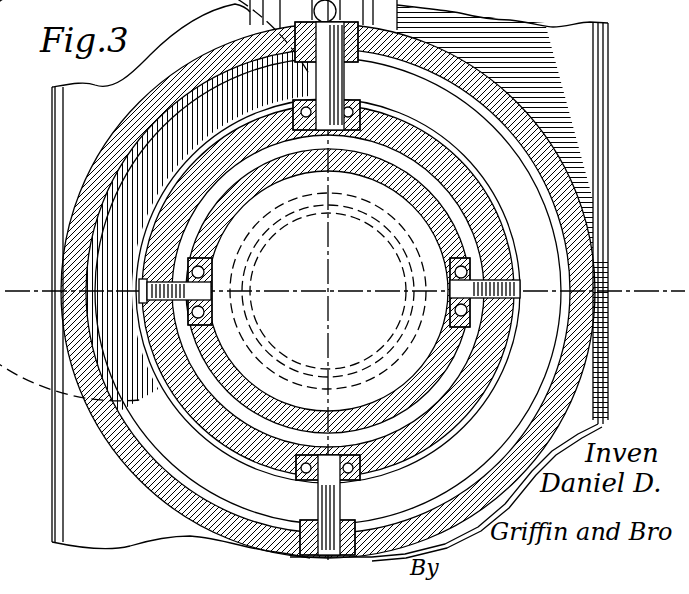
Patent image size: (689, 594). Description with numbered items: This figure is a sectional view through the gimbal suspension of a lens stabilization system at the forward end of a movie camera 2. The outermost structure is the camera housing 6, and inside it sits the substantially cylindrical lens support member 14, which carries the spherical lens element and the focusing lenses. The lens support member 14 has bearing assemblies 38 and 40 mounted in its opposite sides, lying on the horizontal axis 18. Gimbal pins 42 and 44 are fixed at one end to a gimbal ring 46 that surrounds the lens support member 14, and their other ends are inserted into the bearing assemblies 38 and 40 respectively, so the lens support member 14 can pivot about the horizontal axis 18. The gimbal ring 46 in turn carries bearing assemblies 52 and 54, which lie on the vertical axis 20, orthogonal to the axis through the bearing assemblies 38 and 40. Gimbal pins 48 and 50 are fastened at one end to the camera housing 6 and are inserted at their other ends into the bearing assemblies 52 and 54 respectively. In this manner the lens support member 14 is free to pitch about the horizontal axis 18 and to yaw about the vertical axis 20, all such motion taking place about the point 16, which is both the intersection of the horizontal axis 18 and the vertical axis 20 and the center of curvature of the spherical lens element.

The movie camera 2 is at (606, 88).
The housing 6 is at (607, 197).
The lens support member 14 is at (578, 405).
The point 16 is at (328, 290).
The horizontal axis 18 is at (635, 291).
The vertical axis 20 is at (330, 566).
The bearing assembly 38 is at (212, 311).
The bearing assembly 40 is at (465, 345).
The gimbal pin 42 is at (142, 278).
The gimbal pin 44 is at (511, 256).
The gimbal ring 46 is at (505, 325).
The gimbal pin 48 is at (341, 86).
The gimbal pin 50 is at (325, 494).
The bearing assembly 52 is at (358, 102).
The bearing assembly 54 is at (335, 428).